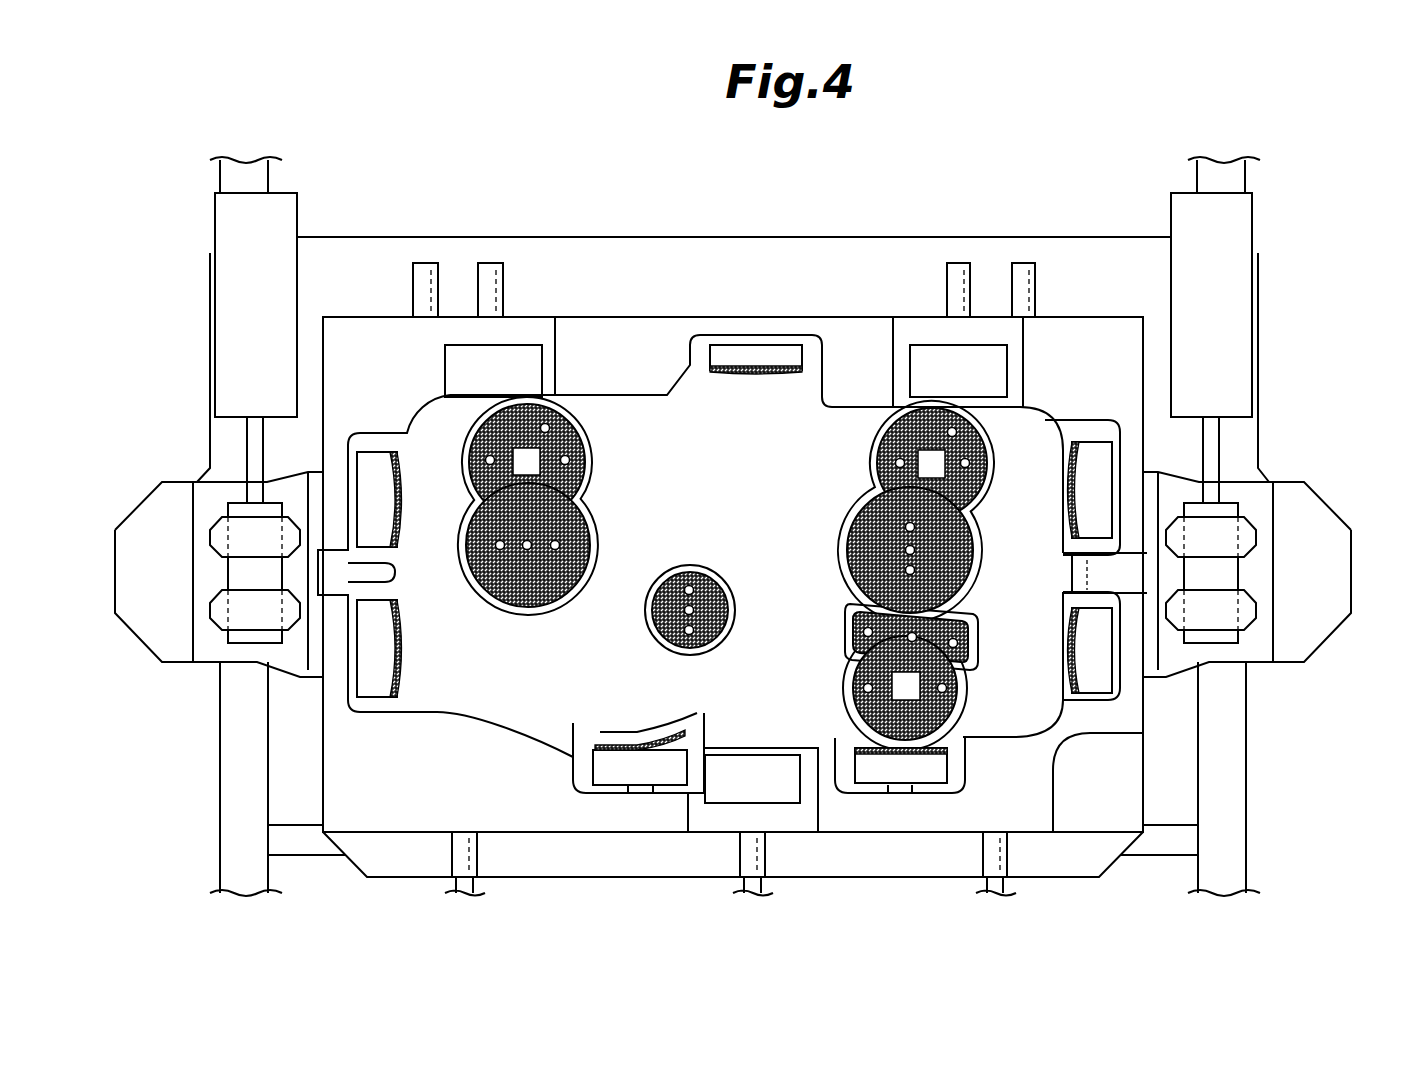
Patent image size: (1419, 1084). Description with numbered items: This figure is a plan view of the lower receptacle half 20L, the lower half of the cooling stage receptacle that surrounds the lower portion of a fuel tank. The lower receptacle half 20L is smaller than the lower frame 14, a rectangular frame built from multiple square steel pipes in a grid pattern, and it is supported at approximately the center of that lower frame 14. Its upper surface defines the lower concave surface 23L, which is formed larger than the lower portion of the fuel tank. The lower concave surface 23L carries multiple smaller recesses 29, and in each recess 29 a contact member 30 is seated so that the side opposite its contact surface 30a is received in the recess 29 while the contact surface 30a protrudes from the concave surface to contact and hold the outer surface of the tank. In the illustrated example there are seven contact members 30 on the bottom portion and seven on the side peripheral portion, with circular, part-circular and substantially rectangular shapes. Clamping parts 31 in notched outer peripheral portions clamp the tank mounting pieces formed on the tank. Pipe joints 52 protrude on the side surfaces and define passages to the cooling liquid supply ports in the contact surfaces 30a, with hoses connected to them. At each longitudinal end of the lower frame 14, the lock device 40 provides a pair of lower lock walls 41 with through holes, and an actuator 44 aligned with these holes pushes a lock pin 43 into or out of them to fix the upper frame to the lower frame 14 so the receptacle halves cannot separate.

The lower frame 14 is at (220, 778).
The lower receptacle half 20L is at (625, 300).
The lower concave surface 23L is at (1020, 445).
The recess 29 is at (377, 445).
The contact member 30 is at (733, 360).
The contact surface 30a is at (748, 372).
The clamping part 31 is at (510, 365).
The lock device 40 is at (185, 432).
The lower lock wall 41 is at (218, 530).
The lock pin 43 is at (240, 573).
The actuator 44 is at (235, 238).
The pipe joint 52 is at (490, 276).